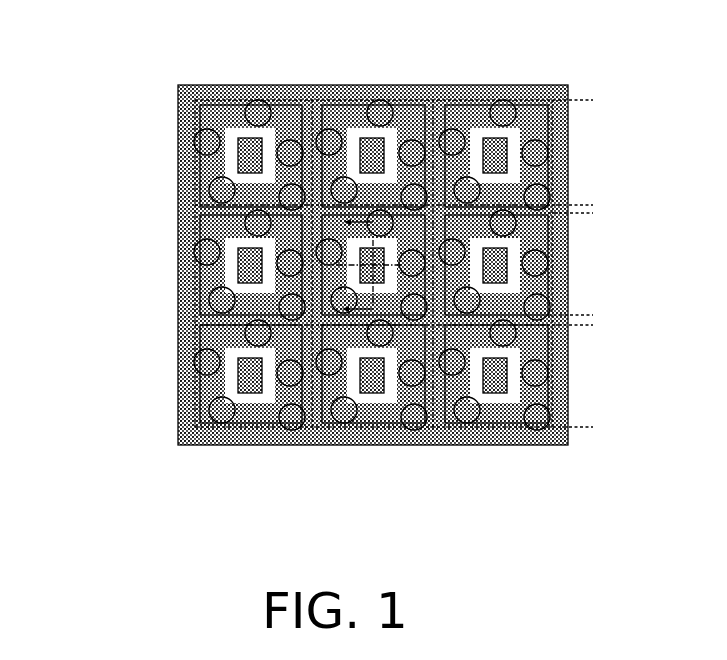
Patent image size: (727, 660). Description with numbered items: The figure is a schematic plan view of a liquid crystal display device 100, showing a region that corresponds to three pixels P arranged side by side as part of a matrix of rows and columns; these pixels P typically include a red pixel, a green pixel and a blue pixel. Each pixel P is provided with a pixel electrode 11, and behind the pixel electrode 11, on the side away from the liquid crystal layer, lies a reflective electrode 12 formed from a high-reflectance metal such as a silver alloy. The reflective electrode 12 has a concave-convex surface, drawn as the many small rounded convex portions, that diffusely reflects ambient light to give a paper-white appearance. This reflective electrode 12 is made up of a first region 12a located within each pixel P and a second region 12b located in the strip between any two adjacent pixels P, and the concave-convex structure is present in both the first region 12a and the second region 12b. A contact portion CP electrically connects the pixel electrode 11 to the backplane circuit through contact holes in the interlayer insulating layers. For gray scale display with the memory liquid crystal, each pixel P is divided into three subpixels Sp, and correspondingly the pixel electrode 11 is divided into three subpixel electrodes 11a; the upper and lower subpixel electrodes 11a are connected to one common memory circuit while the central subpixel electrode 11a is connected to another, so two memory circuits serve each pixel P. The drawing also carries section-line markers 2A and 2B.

The liquid crystal display device 100 is at (398, 230).
The pixel electrode 11 is at (105, 173).
The subpixel electrode 11a is at (144, 285).
The reflective electrode 12 is at (455, 488).
The first region 12a is at (429, 432).
The second region 12b is at (438, 430).
The pixel P is at (242, 85).
The contact portion CP is at (381, 255).
The first light emitting region 2A is at (270, 289).
The second light emitting region 2B is at (366, 265).
The subpixel Sp is at (583, 100).